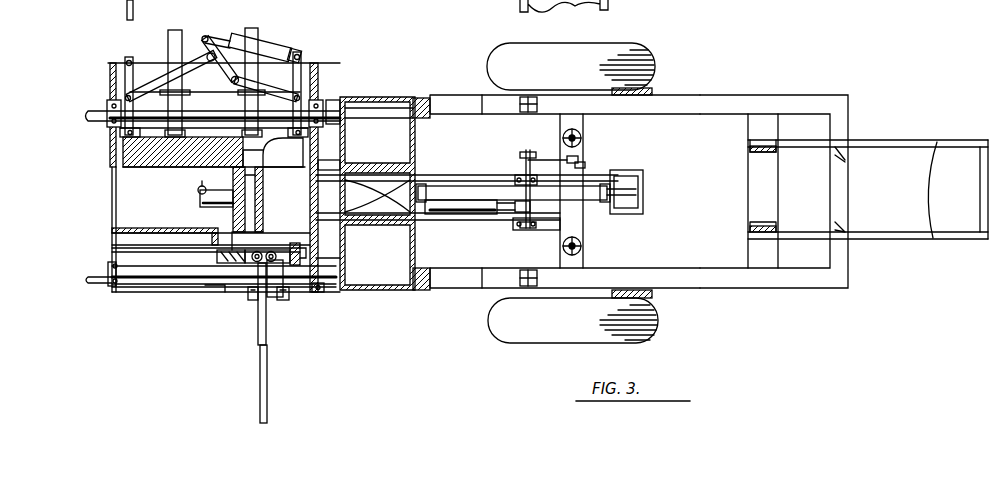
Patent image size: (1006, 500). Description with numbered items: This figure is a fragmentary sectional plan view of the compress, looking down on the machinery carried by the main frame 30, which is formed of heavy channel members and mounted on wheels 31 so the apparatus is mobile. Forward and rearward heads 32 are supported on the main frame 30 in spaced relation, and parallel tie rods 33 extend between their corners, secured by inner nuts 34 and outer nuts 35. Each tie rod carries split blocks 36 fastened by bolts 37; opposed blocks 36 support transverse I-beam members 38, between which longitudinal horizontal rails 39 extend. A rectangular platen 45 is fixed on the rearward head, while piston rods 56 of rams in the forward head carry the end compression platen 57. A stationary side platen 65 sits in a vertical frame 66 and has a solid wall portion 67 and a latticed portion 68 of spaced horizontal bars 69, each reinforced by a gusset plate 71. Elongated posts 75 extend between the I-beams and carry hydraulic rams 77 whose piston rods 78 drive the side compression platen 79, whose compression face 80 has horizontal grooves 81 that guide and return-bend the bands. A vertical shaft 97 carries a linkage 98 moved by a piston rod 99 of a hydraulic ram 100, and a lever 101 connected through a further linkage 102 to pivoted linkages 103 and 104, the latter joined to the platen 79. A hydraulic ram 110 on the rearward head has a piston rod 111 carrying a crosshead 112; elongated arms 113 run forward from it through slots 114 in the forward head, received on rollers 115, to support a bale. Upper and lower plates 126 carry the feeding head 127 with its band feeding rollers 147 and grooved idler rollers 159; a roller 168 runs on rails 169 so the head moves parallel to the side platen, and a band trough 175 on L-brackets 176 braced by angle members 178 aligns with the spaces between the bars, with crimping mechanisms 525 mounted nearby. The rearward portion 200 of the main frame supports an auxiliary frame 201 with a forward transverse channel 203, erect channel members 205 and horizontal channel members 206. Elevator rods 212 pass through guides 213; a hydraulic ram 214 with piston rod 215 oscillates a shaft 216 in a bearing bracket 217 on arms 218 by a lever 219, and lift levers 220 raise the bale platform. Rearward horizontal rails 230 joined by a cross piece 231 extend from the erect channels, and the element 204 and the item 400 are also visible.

The main frame 30 is at (452, 96).
The wheels 31 is at (656, 62).
The heads 32 is at (373, 97).
The tie rods 33 is at (88, 116).
The inner nuts 34 is at (334, 120).
The outer nuts 35 is at (417, 97).
The split blocks 36 is at (118, 130).
The bolts 37 is at (108, 268).
The I-beam members 38 is at (113, 190).
The horizontal rails 39 is at (163, 285).
The platen 45 is at (322, 166).
The piston rods 56 is at (198, 190).
The end compression platen 57 is at (224, 181).
The stationary side platen 65 is at (132, 255).
The vertical frame 66 is at (113, 233).
The solid wall portion 67 is at (153, 232).
The latticed portion 68 is at (234, 225).
The horizontal bars 69 is at (232, 230).
The gusset plate 71 is at (212, 238).
The posts 75 is at (322, 80).
The hydraulic rams 77 is at (170, 39).
The piston rods 78 is at (246, 128).
The side compression platen 79 is at (122, 155).
The compression face 80 is at (165, 167).
The horizontal grooves 81 is at (302, 155).
The vertical shaft 97 is at (266, 37).
The linkage 98 is at (213, 52).
The piston rod 99 is at (246, 40).
The hydraulic ram 100 is at (287, 44).
The lever 101 is at (193, 58).
The linkage 102 is at (146, 88).
The linkage 103 is at (112, 70).
The linkage 104 is at (110, 108).
The hydraulic ram 110 is at (461, 186).
The piston rod 111 is at (629, 190).
The crosshead 112 is at (641, 205).
The elongated arms 113 is at (622, 214).
The slots 114 is at (412, 180).
The rollers 115 is at (408, 180).
The plates 126 is at (276, 298).
The feeding head 127 is at (212, 290).
The band feeding rollers 147 is at (244, 278).
The idler roller 159 is at (266, 250).
The roller 168 is at (250, 300).
The rails 169 is at (135, 295).
The band trough 175 is at (127, 8).
The L-brackets 176 is at (296, 283).
The angle members 178 is at (266, 300).
The upwardly rearwardly extending portion 200 is at (496, 100).
The auxiliary frame 201 is at (720, 95).
The forward transverse channel 203 is at (585, 120).
The tongue 204 is at (848, 186).
The erect channel members 205 is at (760, 150).
The horizontal channel members 206 is at (778, 182).
The elevator rods 212 is at (582, 136).
The guides 213 is at (573, 130).
The hydraulic ram 214 is at (466, 215).
The piston rod 215 is at (515, 215).
The shaft 216 is at (523, 165).
The bearing bracket 217 is at (518, 172).
The arms 218 is at (552, 231).
The lever 219 is at (531, 226).
The lift levers 220 is at (541, 172).
The horizontal rails 230 is at (922, 190).
The cross piece 231 is at (986, 191).
The cable 400 is at (598, 6).
The crimping mechanisms 525 is at (322, 258).